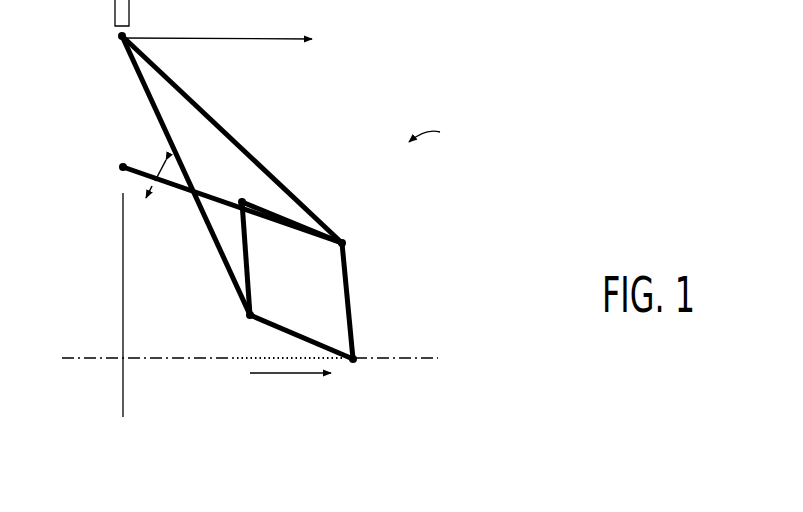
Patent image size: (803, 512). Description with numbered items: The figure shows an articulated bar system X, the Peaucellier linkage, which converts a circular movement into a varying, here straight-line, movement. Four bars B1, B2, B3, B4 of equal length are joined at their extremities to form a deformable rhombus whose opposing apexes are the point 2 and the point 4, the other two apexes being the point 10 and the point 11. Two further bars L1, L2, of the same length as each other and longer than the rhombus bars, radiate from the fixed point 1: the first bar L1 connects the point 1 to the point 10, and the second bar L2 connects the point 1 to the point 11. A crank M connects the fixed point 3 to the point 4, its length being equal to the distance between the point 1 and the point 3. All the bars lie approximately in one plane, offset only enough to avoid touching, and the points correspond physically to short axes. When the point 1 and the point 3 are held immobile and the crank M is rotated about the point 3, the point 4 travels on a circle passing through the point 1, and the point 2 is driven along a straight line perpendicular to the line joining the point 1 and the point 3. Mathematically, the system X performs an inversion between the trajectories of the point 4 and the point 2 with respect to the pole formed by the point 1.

The point 1 is at (118, 39).
The point 2 is at (356, 356).
The point 3 is at (118, 170).
The point 4 is at (247, 198).
The point 10 is at (347, 244).
The point 11 is at (250, 320).
The first bar L1 is at (241, 148).
The second bar L2 is at (167, 124).
The crank M is at (140, 170).
The bar B1 is at (307, 226).
The bar B2 is at (350, 318).
The bar B3 is at (300, 338).
The bar B4 is at (243, 267).
The articulated bar system X is at (439, 139).